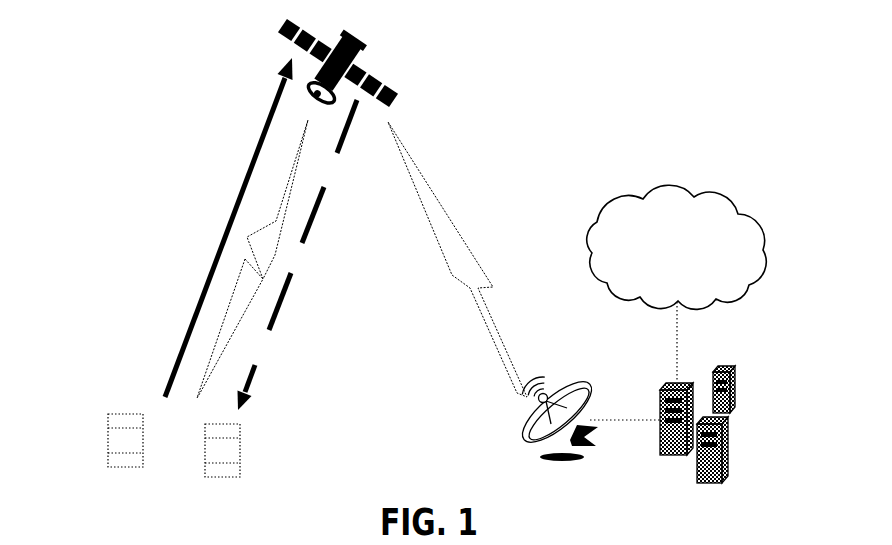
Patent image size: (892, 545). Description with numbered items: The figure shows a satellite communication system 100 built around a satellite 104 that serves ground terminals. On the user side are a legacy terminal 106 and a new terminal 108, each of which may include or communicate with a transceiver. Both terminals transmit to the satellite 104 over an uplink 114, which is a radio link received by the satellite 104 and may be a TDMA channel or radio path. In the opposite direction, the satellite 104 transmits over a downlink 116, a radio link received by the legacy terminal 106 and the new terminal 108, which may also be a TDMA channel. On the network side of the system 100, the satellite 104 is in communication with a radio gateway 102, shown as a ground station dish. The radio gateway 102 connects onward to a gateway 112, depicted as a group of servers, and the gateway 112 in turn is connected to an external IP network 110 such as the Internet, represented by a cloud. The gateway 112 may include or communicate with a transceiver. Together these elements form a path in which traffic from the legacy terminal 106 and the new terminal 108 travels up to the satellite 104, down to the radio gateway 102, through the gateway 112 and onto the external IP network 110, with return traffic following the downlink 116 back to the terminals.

The satellite communication system 100 is at (433, 241).
The radio gateway 102 is at (501, 416).
The satellite 104 is at (281, 67).
The legacy terminal 106 is at (79, 426).
The new terminal 108 is at (282, 436).
The external IP network 110 is at (676, 247).
The gateway 112 is at (756, 395).
The uplink 114 is at (195, 227).
The downlink 116 is at (342, 255).